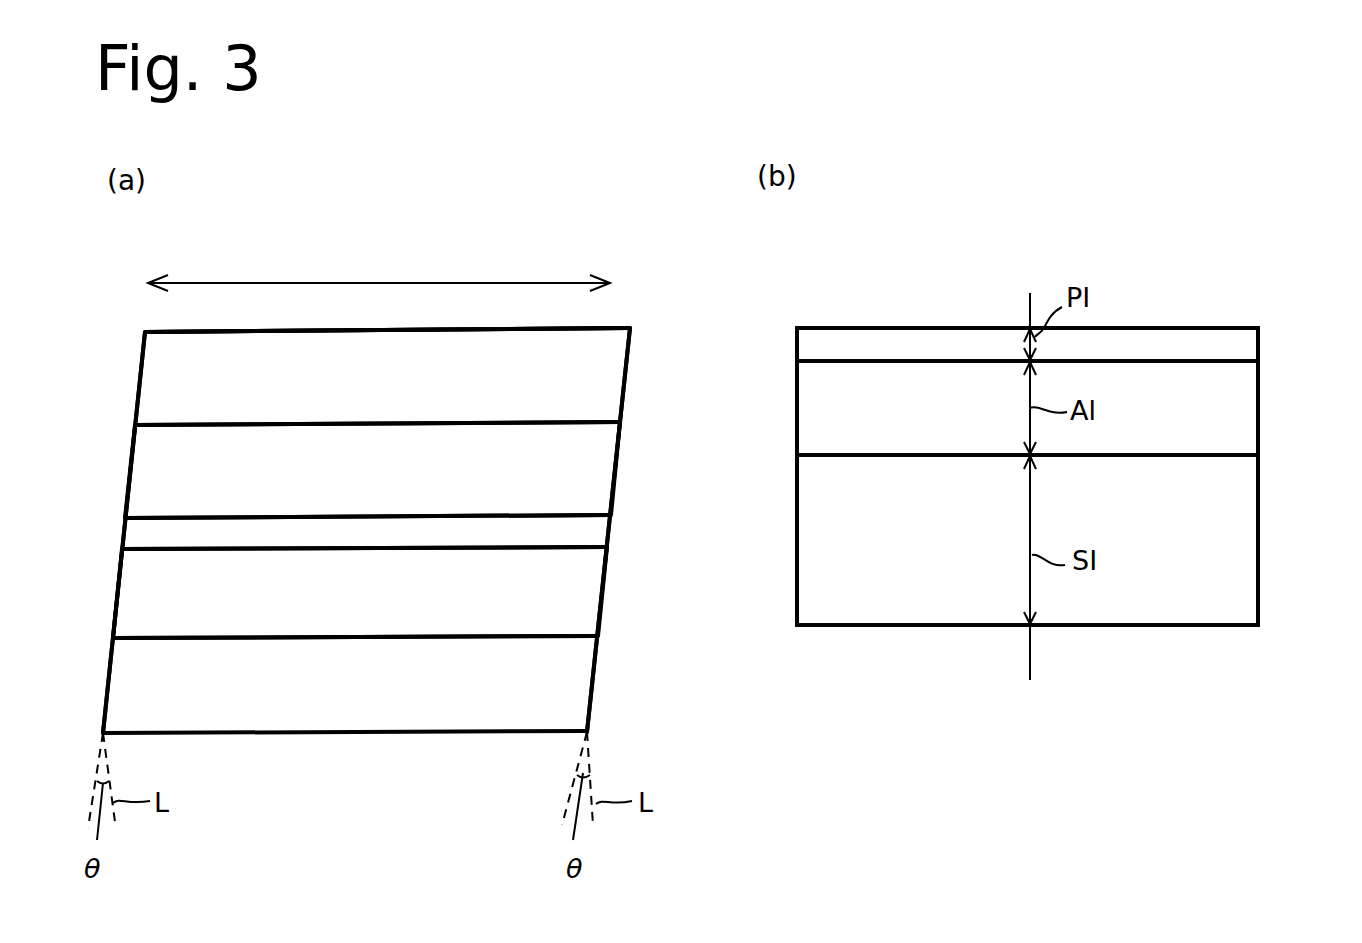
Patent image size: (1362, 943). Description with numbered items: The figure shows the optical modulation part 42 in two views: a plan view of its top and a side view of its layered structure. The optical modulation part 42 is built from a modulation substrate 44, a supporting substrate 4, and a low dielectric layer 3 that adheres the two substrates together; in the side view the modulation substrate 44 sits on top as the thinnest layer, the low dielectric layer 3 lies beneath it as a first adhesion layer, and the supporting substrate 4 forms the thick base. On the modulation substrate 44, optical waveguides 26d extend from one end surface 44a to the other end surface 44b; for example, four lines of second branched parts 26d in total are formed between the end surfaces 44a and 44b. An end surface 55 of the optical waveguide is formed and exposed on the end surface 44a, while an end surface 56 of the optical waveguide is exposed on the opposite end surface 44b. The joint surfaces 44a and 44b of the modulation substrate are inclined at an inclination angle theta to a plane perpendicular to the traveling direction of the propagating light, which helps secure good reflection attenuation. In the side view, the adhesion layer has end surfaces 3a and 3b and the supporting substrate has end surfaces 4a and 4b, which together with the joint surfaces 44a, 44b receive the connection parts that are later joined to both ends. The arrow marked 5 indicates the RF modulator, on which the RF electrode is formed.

The low dielectric layer 3 is at (820, 432).
The end surface of adhesion layer 3a is at (797, 390).
The end surface of adhesion layer 3b is at (1258, 407).
The supporting substrate 4 is at (812, 577).
The end surface of first supporting substrate 4a is at (797, 515).
The end surface of first supporting substrate 4b is at (1258, 518).
The RF modulator 5 is at (485, 279).
The optical waveguides 26d is at (367, 515).
The optical modulation part 42 is at (394, 315).
The modulation substrate 44 is at (278, 350).
The end surface of modulation substrate 44a is at (138, 373).
The end surface of modulation substrate 44b is at (628, 368).
The end surface of optical waveguide 55 is at (125, 518).
The end surface of optical waveguide 56 is at (620, 422).